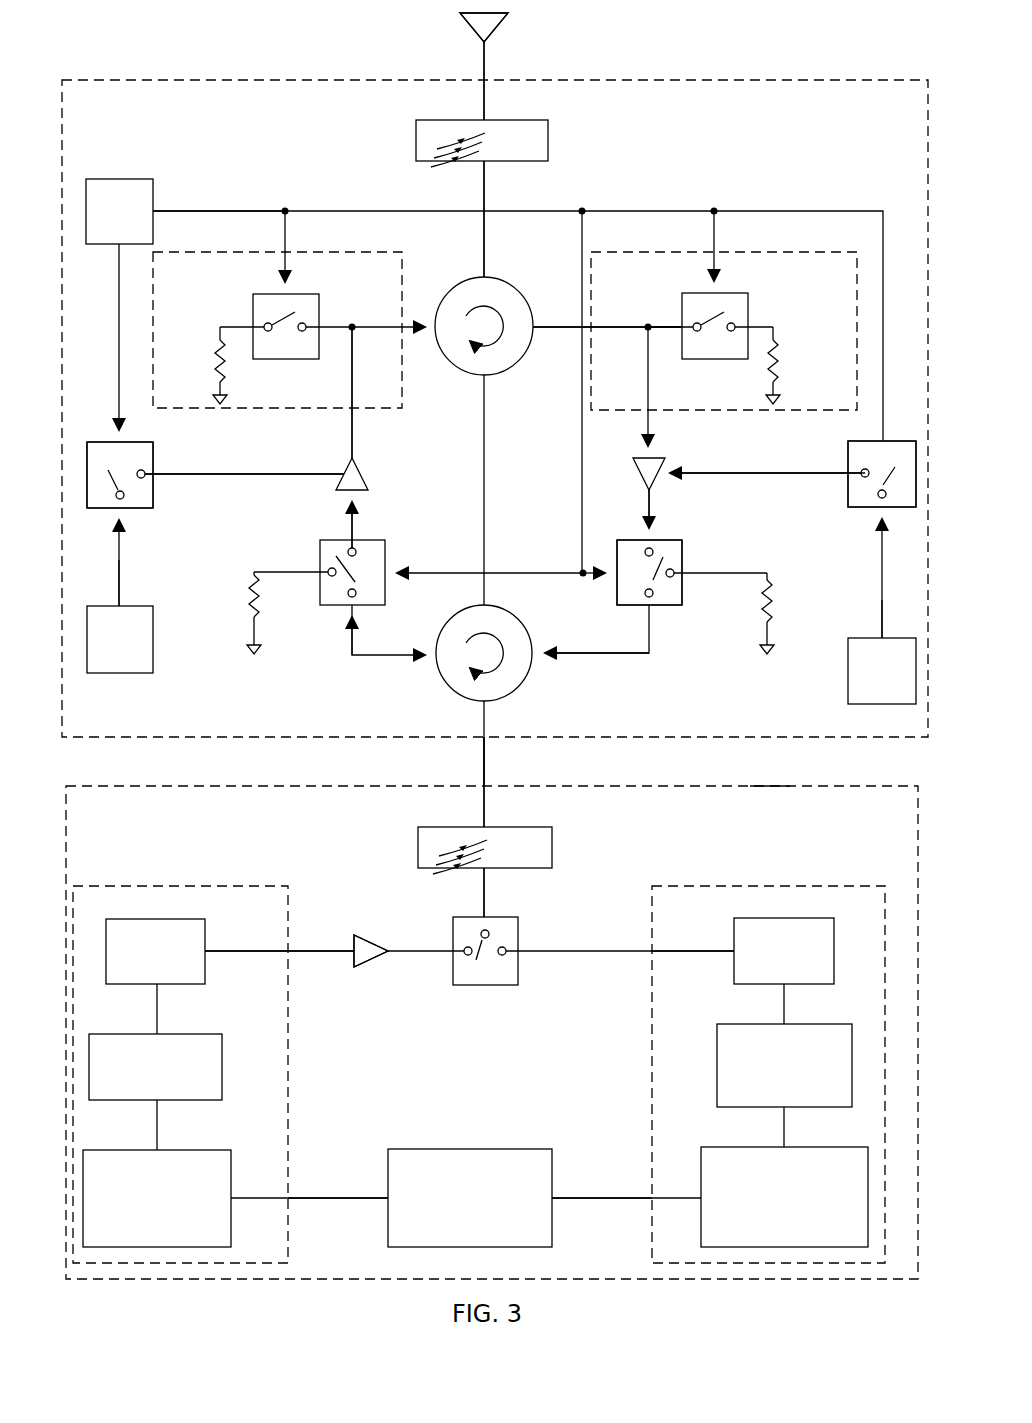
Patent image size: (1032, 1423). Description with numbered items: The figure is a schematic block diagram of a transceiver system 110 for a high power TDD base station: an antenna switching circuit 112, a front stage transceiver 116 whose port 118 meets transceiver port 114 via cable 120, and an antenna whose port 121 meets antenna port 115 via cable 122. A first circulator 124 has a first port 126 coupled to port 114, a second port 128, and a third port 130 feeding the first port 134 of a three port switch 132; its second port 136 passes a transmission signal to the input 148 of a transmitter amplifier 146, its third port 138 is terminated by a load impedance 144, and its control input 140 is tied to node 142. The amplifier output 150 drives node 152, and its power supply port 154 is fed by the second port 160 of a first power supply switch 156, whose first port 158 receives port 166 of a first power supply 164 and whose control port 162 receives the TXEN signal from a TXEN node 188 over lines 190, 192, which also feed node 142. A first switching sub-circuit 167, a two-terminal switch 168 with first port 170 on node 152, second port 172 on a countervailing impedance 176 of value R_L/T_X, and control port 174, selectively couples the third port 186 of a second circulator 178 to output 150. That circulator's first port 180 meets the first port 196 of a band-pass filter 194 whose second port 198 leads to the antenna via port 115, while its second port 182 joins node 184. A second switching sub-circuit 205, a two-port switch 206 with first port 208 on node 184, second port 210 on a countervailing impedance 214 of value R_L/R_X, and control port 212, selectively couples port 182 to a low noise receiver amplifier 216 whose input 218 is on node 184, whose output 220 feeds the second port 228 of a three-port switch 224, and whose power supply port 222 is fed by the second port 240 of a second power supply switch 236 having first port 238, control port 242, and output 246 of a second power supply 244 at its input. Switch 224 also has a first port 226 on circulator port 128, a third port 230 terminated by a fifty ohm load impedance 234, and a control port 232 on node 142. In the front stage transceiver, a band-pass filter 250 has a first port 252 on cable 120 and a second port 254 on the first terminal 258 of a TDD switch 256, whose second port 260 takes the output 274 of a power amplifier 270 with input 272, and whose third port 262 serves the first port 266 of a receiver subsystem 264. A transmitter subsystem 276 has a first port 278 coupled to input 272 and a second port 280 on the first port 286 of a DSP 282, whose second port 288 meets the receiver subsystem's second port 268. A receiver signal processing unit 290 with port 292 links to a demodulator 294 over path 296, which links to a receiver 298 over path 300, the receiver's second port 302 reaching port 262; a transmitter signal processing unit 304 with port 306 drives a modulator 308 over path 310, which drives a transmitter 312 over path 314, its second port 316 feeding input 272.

The transceiver system 110 is at (852, 63).
The antenna switching circuit 112 is at (897, 737).
The transceiver port 114 is at (484, 742).
The antenna port 115 is at (484, 78).
The front stage transceiver 116 is at (770, 786).
The port 118 is at (484, 790).
The cable 120 is at (486, 760).
The antenna port 121 is at (470, 30).
The cable 122 is at (484, 52).
The first circulator 124 is at (446, 692).
The first port 126 is at (486, 703).
The second port 128 is at (535, 652).
The third port 130 is at (436, 651).
The three port switch 132 is at (390, 556).
The first port 134 is at (352, 607).
The second port 136 is at (352, 538).
The third port 138 is at (320, 570).
The control input 140 is at (388, 576).
The node 142 is at (285, 209).
The load impedance 144 is at (240, 582).
The transmitter amplifier 146 is at (370, 474).
The input 148 is at (354, 496).
The output 150 is at (352, 452).
The node 152 is at (352, 345).
The power supply port 154 is at (344, 470).
The first power supply switch 156 is at (160, 517).
The first port 158 is at (119, 510).
The second port 160 is at (153, 476).
The control port 162 is at (119, 438).
The first power supply 164 is at (120, 639).
The port 166 is at (119, 600).
The first switching sub-circuit 167 is at (222, 252).
The two-terminal switch 168 is at (323, 292).
The first port 170 is at (319, 324).
The second port 172 is at (253, 324).
The control port 174 is at (285, 290).
The countervailing impedance 176 is at (215, 355).
The second circulator 178 is at (468, 262).
The first port 180 is at (484, 277).
The second port 182 is at (533, 323).
The node 184 is at (648, 330).
The third port 186 is at (437, 343).
The TXEN node 188 is at (119, 211).
The transmit enable output 190 is at (119, 250).
The transmit enable output 192 is at (153, 209).
The band-pass filter 194 is at (482, 143).
The first port 196 is at (484, 167).
The second port 198 is at (484, 118).
The second switching sub-circuit 205 is at (812, 252).
The two-port switch 206 is at (752, 290).
The first port 208 is at (682, 324).
The second port 210 is at (748, 324).
The control port 212 is at (714, 290).
The countervailing impedance 214 is at (790, 350).
The receiver amplifier 216 is at (668, 452).
The input 218 is at (648, 452).
The output 220 is at (648, 494).
The power supply port 222 is at (658, 480).
The three-port switch 224 is at (692, 590).
The first port 226 is at (650, 615).
The second port 228 is at (650, 538).
The third port 230 is at (682, 570).
The control port 232 is at (617, 582).
The load impedance 234 is at (790, 600).
The second power supply switch 236 is at (832, 490).
The first port 238 is at (882, 510).
The second port 240 is at (848, 470).
The control port 242 is at (883, 440).
The second power supply 244 is at (882, 671).
The output 246 is at (882, 636).
The front stage band-pass filter 250 is at (485, 850).
The first port 252 is at (484, 824).
The second port 254 is at (484, 872).
The TDD switch 256 is at (538, 918).
The first terminal 258 is at (484, 912).
The second port 260 is at (453, 956).
The third port 262 is at (518, 952).
The receiver subsystem 264 is at (652, 1096).
The first port 266 is at (651, 950).
The second port 268 is at (652, 1199).
The front stage power amplifier 270 is at (372, 940).
The input 272 is at (354, 958).
The output 274 is at (390, 958).
The transmitter subsystem 276 is at (288, 1078).
The first port 278 is at (289, 952).
The second port 280 is at (289, 1197).
The digital signal processor 282 is at (470, 1198).
The first port 286 is at (388, 1199).
The second port 288 is at (552, 1197).
The receiver signal processing unit 290 is at (784, 1197).
The first port 292 is at (701, 1196).
The demodulator unit 294 is at (784, 1065).
The path 296 is at (782, 1130).
The receiver 298 is at (784, 951).
The path 300 is at (782, 1000).
The second port 302 is at (734, 950).
The transmitter signal processing unit 304 is at (157, 1198).
The first port 306 is at (231, 1196).
The modulator unit 308 is at (155, 1067).
The path 310 is at (157, 1128).
The transmitter 312 is at (155, 951).
The path 314 is at (157, 1005).
The second port 316 is at (207, 950).